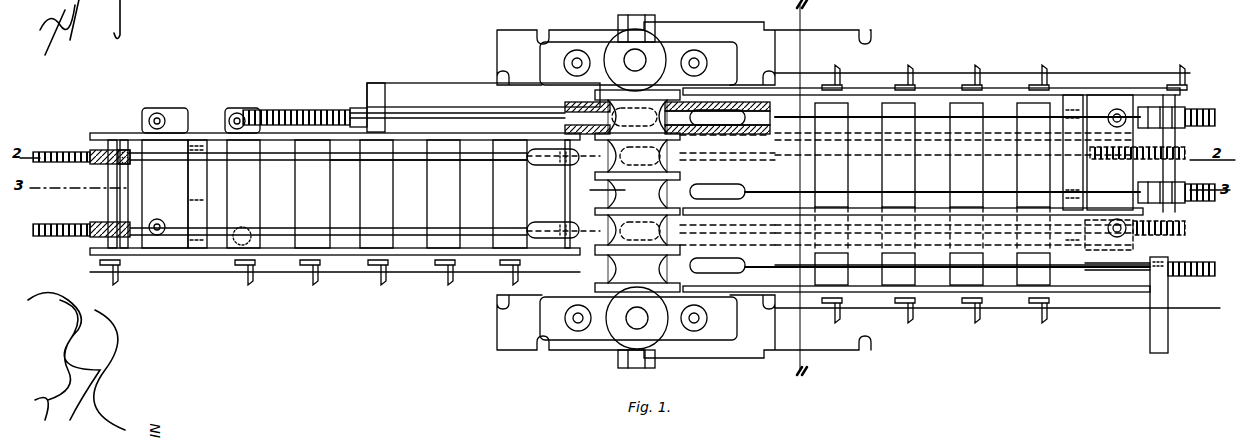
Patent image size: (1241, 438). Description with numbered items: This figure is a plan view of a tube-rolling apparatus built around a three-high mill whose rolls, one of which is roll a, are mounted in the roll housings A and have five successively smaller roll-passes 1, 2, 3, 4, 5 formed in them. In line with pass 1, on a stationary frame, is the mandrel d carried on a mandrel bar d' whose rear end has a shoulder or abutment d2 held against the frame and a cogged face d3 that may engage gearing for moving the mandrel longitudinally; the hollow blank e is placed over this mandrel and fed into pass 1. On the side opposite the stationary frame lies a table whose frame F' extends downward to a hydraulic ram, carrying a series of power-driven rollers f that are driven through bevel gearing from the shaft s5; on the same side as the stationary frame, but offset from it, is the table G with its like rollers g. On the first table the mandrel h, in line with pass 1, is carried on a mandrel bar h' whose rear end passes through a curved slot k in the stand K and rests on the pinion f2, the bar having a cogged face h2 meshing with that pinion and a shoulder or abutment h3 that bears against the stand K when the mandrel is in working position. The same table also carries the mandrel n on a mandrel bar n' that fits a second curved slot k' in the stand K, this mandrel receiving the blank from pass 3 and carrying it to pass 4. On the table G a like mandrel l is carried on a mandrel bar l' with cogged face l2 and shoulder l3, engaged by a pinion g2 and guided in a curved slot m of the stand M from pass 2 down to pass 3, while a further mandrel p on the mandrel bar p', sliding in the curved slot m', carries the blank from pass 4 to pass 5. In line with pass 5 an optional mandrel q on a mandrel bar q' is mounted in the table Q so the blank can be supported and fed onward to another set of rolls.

The roll housings A is at (574, 44).
The roll a is at (601, 191).
The mandrel d is at (601, 140).
The mandrel bar d' is at (475, 100).
The shoulder or abutment d2 is at (358, 108).
The cogged face d3 is at (278, 110).
The blank e is at (565, 106).
The mandrel h is at (717, 121).
The mandrel bar h' is at (957, 84).
The cogged face h2 is at (1198, 112).
The shoulder or abutment h3 is at (1146, 107).
The curved slot k is at (1094, 132).
The curved slot k' is at (1133, 208).
The stand K is at (1073, 167).
The power-driven rollers f is at (932, 155).
The table frame F' is at (955, 155).
The pinion f2 is at (1182, 127).
The mandrel n is at (915, 182).
The mandrel bar n' is at (862, 182).
The mandrel q is at (920, 255).
The mandrel bar q' is at (934, 309).
The table Q is at (1150, 305).
The power-driven rollers g is at (377, 194).
The pinion g2 is at (96, 166).
The table G is at (320, 194).
The mandrel l is at (553, 194).
The mandrel bar l' is at (428, 167).
The cogged face l2 is at (47, 150).
The shoulder l3 is at (125, 166).
The curved slot m is at (197, 194).
The curved slot m' is at (173, 218).
The stand M is at (165, 194).
The mandrel p is at (553, 220).
The mandrel bar p' is at (257, 224).
The shaft s5 is at (268, 273).
The roll-pass 1 is at (634, 117).
The roll-pass 2 is at (640, 156).
The roll-pass 3 is at (634, 191).
The roll-pass 4 is at (640, 231).
The roll-pass 5 is at (634, 269).